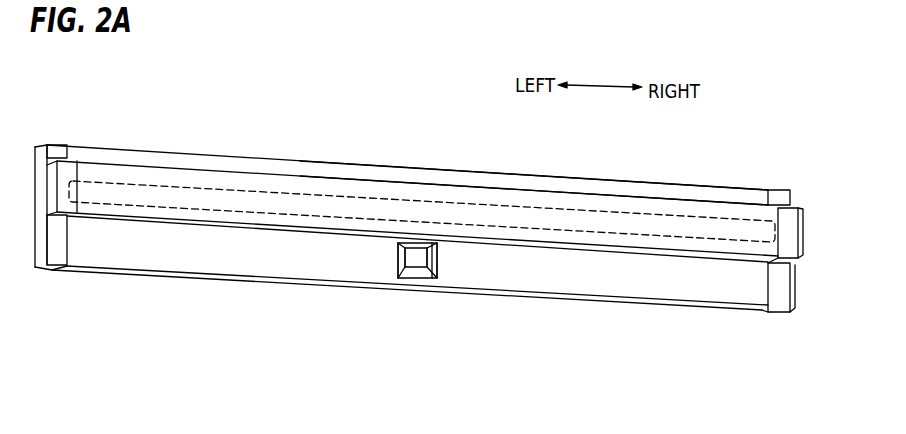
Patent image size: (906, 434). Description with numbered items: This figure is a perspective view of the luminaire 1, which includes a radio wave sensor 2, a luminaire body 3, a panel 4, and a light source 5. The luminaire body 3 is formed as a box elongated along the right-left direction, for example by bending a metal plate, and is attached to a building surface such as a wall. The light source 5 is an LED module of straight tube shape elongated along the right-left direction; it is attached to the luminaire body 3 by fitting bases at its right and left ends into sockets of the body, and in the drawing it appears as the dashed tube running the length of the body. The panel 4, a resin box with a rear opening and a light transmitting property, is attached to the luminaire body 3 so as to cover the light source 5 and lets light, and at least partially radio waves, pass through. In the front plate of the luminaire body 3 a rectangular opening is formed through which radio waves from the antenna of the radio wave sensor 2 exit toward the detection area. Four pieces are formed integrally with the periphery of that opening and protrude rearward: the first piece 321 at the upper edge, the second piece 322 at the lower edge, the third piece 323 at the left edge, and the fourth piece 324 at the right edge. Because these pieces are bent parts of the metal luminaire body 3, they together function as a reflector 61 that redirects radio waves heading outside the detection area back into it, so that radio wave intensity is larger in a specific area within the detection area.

The luminaire 1 is at (745, 176).
The radio wave sensor 2 is at (390, 255).
The luminaire body 3 is at (570, 183).
The panel 4 is at (485, 188).
The light source 5 is at (363, 200).
The reflector 61 is at (434, 304).
The first piece 321 is at (427, 252).
The second piece 322 is at (417, 268).
The third piece 323 is at (397, 267).
The fourth piece 324 is at (435, 263).